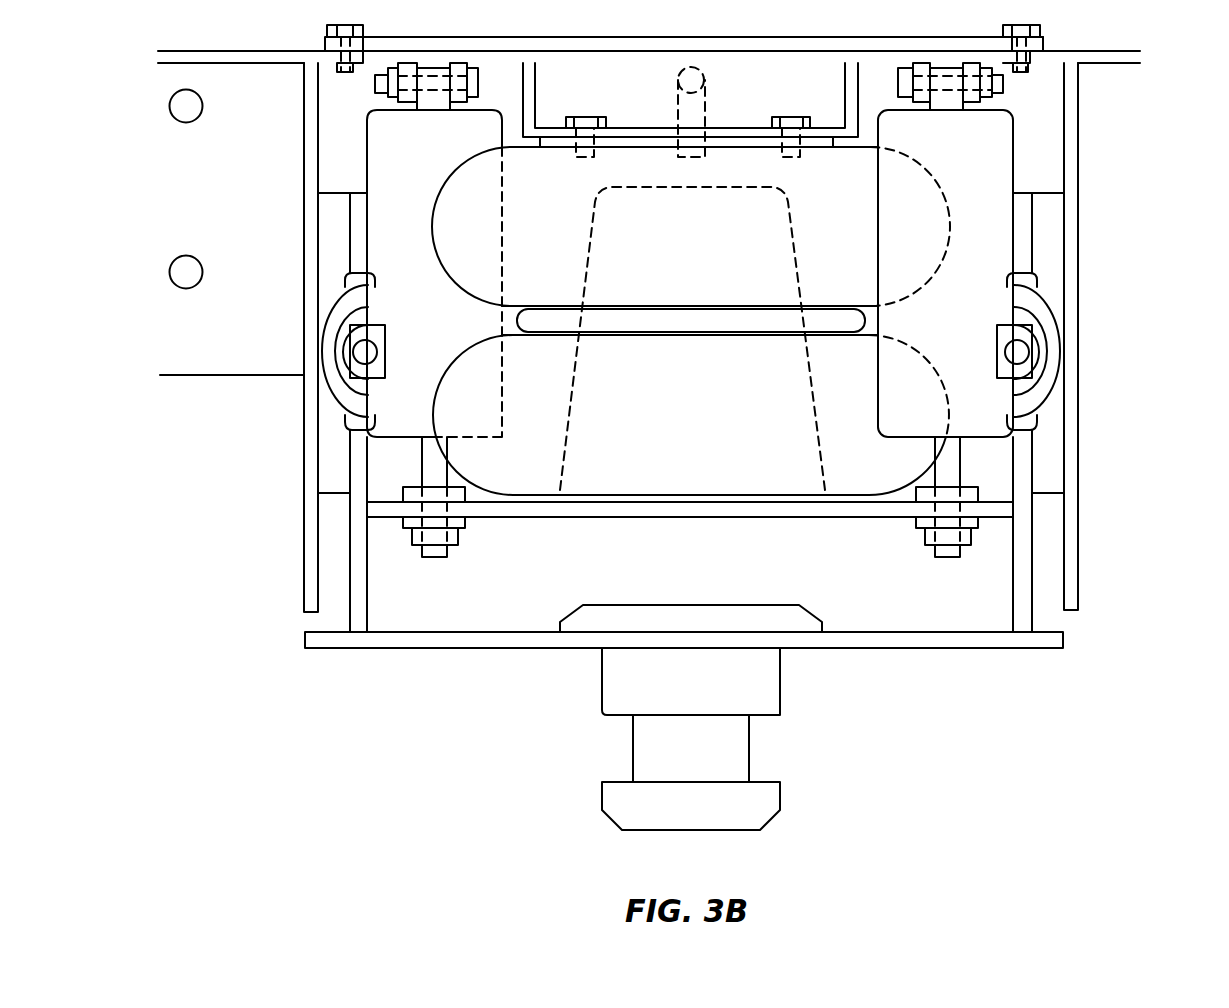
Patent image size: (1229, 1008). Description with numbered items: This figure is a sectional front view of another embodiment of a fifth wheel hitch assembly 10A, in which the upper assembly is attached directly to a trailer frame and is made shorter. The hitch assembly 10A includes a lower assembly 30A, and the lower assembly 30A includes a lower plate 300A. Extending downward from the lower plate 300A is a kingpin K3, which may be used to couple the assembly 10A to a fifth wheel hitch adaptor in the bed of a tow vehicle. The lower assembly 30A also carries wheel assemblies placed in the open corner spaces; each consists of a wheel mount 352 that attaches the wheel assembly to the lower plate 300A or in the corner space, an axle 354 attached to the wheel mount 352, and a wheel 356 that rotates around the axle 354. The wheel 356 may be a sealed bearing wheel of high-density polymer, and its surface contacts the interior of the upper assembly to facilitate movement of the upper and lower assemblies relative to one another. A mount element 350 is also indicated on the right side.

The fifth wheel hitch assembly 10A is at (1108, 330).
The lower assembly 30A is at (1090, 621).
The lower plate 300A is at (1050, 640).
The pivot mount 350 is at (1045, 313).
The wheel mount 352 is at (337, 392).
The axle 354 is at (352, 365).
The wheel 356 is at (362, 352).
The kingpin K3 is at (778, 793).